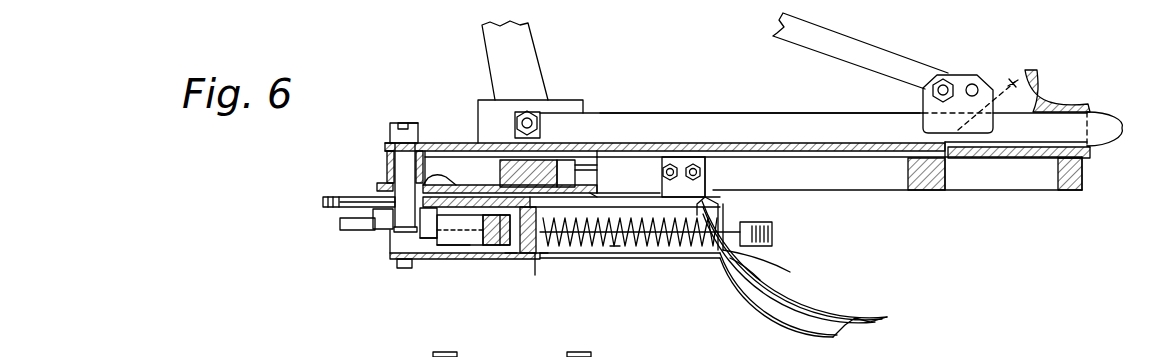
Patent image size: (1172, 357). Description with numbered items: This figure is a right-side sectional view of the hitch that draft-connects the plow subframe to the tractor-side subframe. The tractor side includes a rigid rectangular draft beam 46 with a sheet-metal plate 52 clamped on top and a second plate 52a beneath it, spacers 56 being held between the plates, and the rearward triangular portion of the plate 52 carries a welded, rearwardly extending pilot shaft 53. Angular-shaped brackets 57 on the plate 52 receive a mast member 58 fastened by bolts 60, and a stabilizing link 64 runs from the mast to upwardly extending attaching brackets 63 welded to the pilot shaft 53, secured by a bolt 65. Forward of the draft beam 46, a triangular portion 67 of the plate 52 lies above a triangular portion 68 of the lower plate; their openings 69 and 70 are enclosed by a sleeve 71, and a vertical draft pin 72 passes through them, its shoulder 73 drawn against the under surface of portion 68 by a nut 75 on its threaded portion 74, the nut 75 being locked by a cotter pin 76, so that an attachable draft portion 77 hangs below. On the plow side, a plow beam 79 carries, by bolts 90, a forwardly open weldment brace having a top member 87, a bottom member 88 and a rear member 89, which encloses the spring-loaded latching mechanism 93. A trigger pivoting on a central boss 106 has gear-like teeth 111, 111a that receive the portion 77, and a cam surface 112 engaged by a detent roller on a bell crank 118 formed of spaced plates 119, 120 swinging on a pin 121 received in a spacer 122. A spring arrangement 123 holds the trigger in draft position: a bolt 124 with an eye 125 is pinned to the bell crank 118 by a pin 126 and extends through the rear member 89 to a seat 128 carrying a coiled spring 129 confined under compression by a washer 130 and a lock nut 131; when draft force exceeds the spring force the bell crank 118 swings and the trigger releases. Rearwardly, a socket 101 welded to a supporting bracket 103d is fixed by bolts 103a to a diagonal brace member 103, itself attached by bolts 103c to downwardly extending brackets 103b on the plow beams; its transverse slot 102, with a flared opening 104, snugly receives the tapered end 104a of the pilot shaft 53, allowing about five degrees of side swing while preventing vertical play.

The draft beam 46 is at (599, 162).
The plate 52 is at (498, 142).
The housing wall 52a is at (612, 161).
The pilot shaft 53 is at (830, 113).
The spacers 56 is at (470, 163).
The angular-shaped brackets 57 is at (583, 100).
The mast member 58 is at (532, 56).
The bolts 60 is at (527, 112).
The attaching brackets 63 is at (980, 83).
The stabilizing link 64 is at (882, 52).
The bolt 65 is at (948, 80).
The triangularly-shaped portion 67 is at (385, 146).
The triangularly-shaped portion 68 is at (377, 186).
The opening 69 is at (388, 151).
The opening 70 is at (439, 174).
The sleeve 71 is at (388, 168).
The draft pin 72 is at (438, 143).
The shoulder 73 is at (395, 200).
The threaded portion 74 is at (414, 123).
The nut 75 is at (391, 132).
The cotter pin 76 is at (404, 123).
The attachable draft portion 77 is at (340, 220).
The plow beam 79 is at (794, 269).
The top member 87 is at (323, 198).
The bottom member 88 is at (490, 248).
The rear member 89 is at (543, 275).
The bolts 90 is at (460, 352).
The latching mechanism 93 is at (591, 250).
The socket 101 is at (1078, 103).
The slot 102 is at (1090, 150).
The diagonal brace member 103 is at (945, 190).
The bolts 103a is at (700, 172).
The downwardly extending brackets 103b is at (705, 190).
The bolts 103c is at (715, 205).
The supporting bracket 103d is at (1082, 190).
The flared opening 104 is at (1012, 82).
The tapered end 104a is at (1120, 128).
The boss 106 is at (397, 264).
The tooth 111 is at (390, 232).
The tooth 111a is at (510, 185).
The cam surface 112 is at (373, 215).
The bell crank 118 is at (452, 232).
The plate 119 is at (447, 235).
The plate 120 is at (462, 245).
The pin 121 is at (510, 258).
The spacer 122 is at (475, 250).
The spring arrangement 123 is at (618, 200).
The bolt 124 is at (772, 240).
The eye 125 is at (500, 250).
The pin 126 is at (510, 255).
The spring seat 128 is at (544, 256).
The coiled spring 129 is at (613, 248).
The washer 130 is at (740, 262).
The lock nut 131 is at (772, 264).